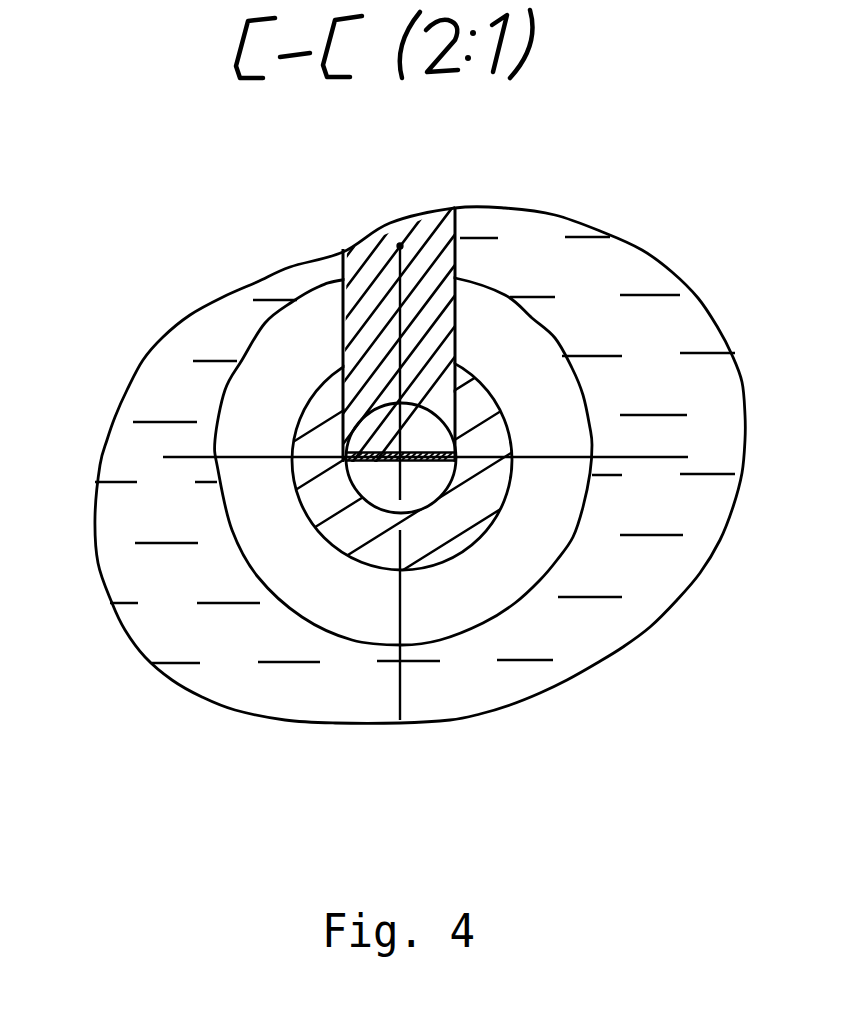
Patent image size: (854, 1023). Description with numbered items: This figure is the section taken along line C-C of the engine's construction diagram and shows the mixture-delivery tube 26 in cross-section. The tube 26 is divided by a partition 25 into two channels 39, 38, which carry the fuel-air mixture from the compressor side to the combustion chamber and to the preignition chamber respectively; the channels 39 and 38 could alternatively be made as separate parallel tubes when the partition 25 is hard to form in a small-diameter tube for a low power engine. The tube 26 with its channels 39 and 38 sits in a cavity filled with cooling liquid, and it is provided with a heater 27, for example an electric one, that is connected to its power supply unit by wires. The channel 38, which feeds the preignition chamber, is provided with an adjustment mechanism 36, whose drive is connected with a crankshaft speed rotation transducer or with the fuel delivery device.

The partition 25 is at (391, 462).
The tube 26 is at (322, 498).
The heater 27 is at (537, 510).
The adjustment mechanism 36 is at (373, 283).
The channel 38 is at (417, 438).
The channel 39 is at (420, 477).